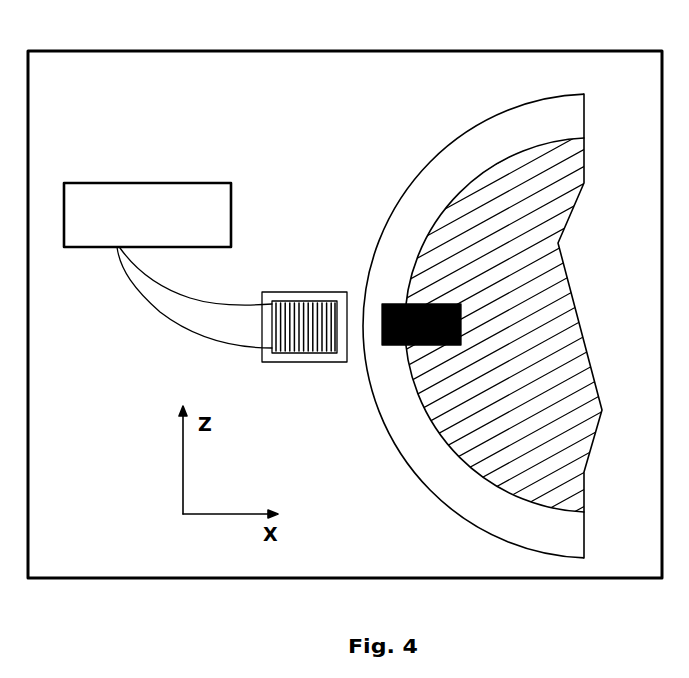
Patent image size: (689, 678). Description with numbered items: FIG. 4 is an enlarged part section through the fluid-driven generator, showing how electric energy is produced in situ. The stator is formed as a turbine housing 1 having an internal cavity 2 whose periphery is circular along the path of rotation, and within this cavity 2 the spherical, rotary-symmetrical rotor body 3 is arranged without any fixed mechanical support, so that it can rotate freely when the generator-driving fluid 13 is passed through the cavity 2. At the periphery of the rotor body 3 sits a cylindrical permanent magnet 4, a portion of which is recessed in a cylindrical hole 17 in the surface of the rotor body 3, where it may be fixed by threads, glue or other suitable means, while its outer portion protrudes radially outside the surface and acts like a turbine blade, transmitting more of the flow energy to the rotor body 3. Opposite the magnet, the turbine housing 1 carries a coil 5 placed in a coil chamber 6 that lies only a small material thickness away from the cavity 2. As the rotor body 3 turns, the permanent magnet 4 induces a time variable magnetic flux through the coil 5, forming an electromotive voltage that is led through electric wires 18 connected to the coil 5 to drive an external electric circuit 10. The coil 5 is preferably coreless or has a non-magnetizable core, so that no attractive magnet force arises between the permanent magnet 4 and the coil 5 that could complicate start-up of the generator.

The turbine housing 1 is at (192, 117).
The cavity 2 is at (412, 423).
The rotor body 3 is at (463, 452).
The permanent magnet 4 is at (382, 345).
The coil 5 is at (288, 317).
The coil chamber 6 is at (267, 353).
The external electric circuit 10 is at (217, 202).
The generator-driving fluid 13 is at (546, 131).
The cylindrical hole 17 is at (461, 323).
The electric wires 18 is at (182, 300).